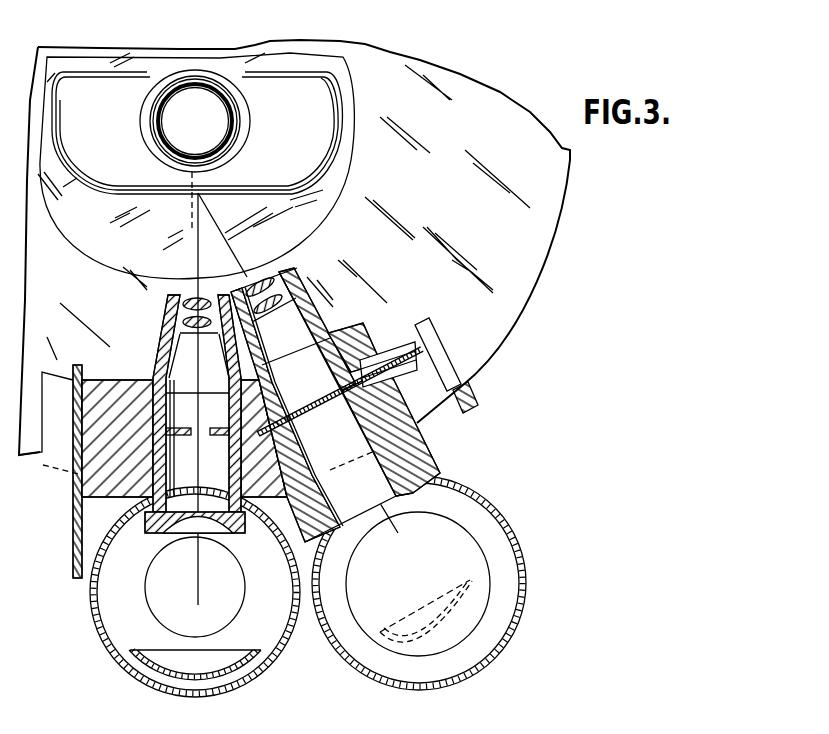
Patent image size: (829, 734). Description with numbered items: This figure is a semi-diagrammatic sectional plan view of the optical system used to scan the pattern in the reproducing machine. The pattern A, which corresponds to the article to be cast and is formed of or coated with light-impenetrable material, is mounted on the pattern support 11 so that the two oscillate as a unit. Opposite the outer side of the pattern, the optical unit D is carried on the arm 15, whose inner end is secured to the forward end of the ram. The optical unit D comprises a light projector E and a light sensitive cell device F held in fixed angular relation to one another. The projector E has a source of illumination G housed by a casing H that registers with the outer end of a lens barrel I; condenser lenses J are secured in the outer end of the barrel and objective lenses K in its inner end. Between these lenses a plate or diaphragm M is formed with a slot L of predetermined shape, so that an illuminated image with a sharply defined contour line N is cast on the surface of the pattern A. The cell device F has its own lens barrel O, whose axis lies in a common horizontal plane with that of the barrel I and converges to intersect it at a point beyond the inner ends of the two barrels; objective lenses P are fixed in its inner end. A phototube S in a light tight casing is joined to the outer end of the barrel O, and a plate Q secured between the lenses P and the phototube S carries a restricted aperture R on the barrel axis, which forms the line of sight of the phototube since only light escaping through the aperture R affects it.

The pattern support 11 is at (538, 272).
The arm 15 is at (62, 485).
The pattern A is at (330, 138).
The contour line N is at (202, 194).
The optical unit D is at (181, 403).
The light projector E is at (160, 340).
The lens barrel I is at (179, 401).
The objective lenses K is at (190, 302).
The slot L is at (209, 440).
The plate or diaphragm M is at (220, 428).
The condenser lenses J is at (163, 536).
The source of illumination G is at (247, 592).
The casing H is at (273, 657).
The phototube S is at (400, 650).
The light sensitive cell device F is at (324, 318).
The objective lenses P is at (278, 282).
The lens barrel O is at (335, 333).
The plate Q is at (330, 397).
The restricted aperture R is at (320, 414).